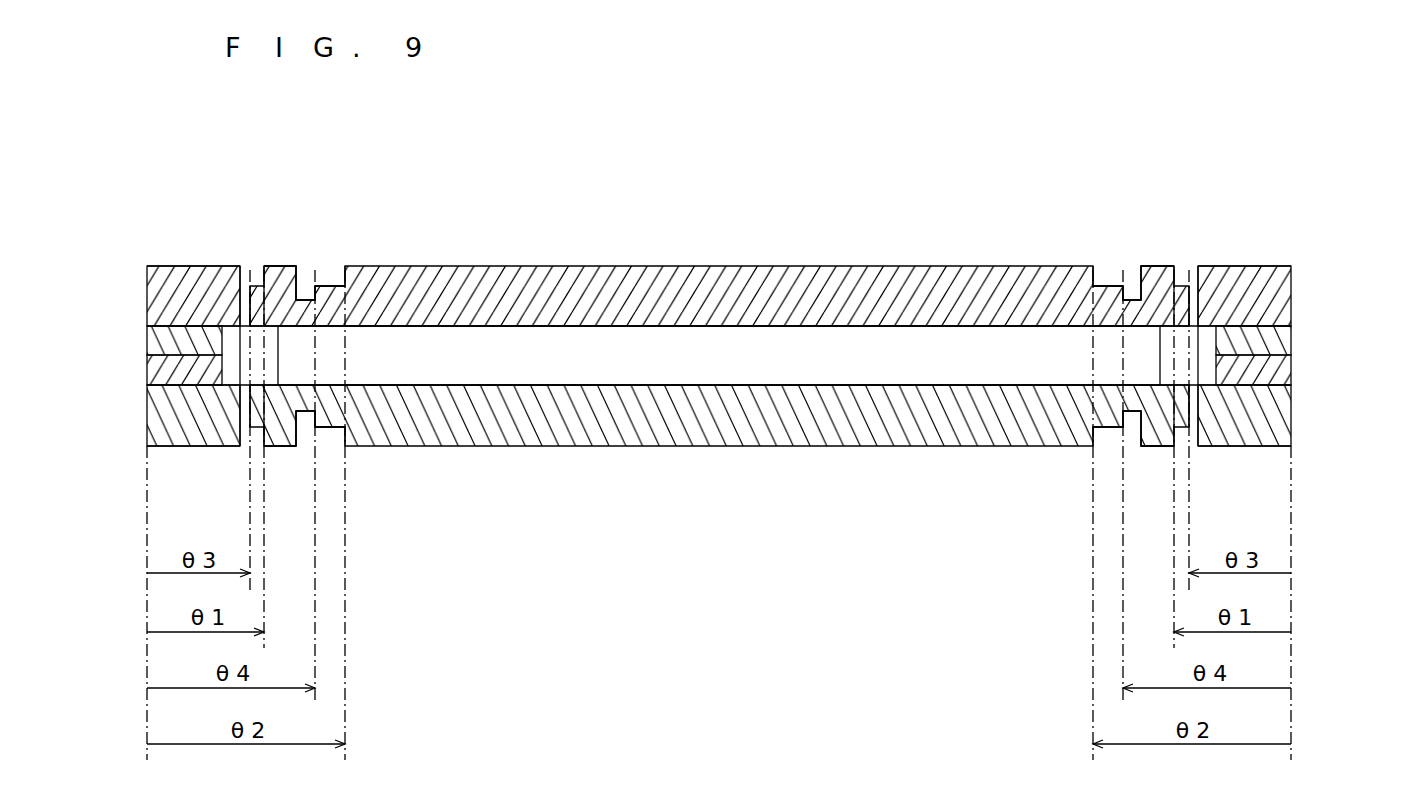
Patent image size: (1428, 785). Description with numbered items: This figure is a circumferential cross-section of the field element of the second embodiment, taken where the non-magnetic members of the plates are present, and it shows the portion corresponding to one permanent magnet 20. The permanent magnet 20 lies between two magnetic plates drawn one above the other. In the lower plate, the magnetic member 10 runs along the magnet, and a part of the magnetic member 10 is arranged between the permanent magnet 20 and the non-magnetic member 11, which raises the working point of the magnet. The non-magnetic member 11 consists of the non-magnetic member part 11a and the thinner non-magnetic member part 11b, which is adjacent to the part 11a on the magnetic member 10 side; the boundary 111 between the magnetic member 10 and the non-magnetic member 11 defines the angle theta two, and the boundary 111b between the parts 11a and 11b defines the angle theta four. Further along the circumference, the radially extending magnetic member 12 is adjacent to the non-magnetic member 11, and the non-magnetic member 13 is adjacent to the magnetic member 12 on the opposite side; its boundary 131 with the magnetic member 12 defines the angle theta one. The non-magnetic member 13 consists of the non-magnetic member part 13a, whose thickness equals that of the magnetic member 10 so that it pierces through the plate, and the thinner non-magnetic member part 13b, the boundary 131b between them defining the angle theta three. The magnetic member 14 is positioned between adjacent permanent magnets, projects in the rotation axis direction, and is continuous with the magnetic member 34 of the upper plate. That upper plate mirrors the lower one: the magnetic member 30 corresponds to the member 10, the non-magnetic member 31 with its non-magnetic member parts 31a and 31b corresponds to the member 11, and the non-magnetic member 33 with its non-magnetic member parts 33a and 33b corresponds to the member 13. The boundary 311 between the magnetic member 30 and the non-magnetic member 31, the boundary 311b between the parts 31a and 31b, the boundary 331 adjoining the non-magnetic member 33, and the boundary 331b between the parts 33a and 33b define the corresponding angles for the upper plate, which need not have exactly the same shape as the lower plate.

The magnetic member 10 is at (714, 440).
The non-magnetic member 11 is at (436, 490).
The non-magnetic member part 11a is at (306, 450).
The non-magnetic member part 11b is at (314, 450).
The boundary 111 is at (336, 455).
The boundary 111b is at (304, 452).
The magnetic member 12 is at (273, 448).
The non-magnetic member 13 is at (83, 448).
The non-magnetic member part 13a is at (262, 455).
The non-magnetic member part 13b is at (259, 448).
The boundary 131 is at (260, 449).
The boundary 131b is at (237, 415).
The magnetic member 14 is at (153, 365).
The permanent magnet 20 is at (597, 370).
The magnetic member 30 is at (718, 270).
The non-magnetic member 31 is at (431, 150).
The non-magnetic member part 31a is at (308, 292).
The non-magnetic member part 31b is at (314, 292).
The boundary 311 is at (343, 265).
The boundary 311b is at (308, 277).
The non-magnetic member 33 is at (145, 178).
The non-magnetic member part 33a is at (246, 272).
The non-magnetic member part 33b is at (258, 257).
The boundary 331 is at (255, 268).
The boundary 331b is at (237, 302).
The magnetic member 34 is at (153, 340).